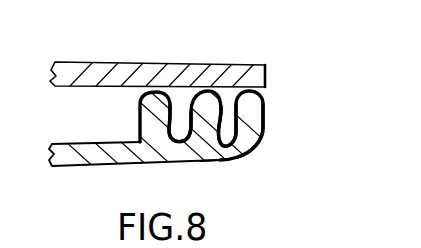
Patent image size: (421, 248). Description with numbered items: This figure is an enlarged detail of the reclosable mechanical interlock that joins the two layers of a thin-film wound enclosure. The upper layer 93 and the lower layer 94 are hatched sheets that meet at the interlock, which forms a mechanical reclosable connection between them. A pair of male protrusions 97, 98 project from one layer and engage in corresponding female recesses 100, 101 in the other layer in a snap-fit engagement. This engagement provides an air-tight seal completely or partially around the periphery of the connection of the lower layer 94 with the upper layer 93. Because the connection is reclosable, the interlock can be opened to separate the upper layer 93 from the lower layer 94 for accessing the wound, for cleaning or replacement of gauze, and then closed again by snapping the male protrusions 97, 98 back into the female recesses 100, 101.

The upper layer 93 is at (134, 76).
The lower layer 94 is at (103, 156).
The male protrusion 97 is at (173, 92).
The male protrusion 98 is at (230, 113).
The female recess 100 is at (212, 160).
The female recess 101 is at (262, 129).